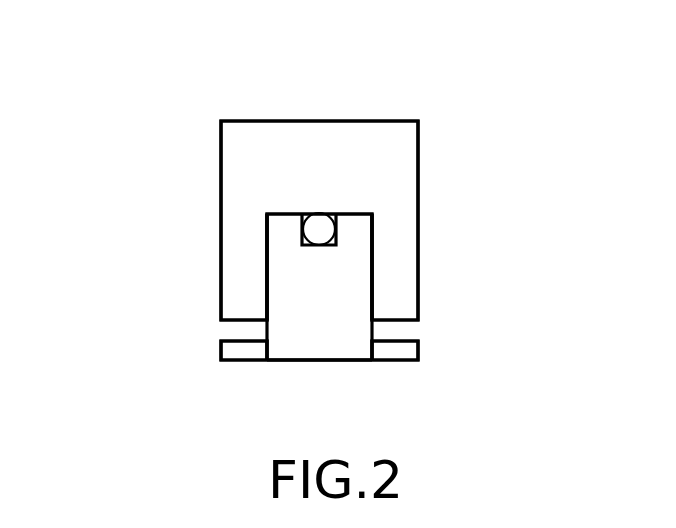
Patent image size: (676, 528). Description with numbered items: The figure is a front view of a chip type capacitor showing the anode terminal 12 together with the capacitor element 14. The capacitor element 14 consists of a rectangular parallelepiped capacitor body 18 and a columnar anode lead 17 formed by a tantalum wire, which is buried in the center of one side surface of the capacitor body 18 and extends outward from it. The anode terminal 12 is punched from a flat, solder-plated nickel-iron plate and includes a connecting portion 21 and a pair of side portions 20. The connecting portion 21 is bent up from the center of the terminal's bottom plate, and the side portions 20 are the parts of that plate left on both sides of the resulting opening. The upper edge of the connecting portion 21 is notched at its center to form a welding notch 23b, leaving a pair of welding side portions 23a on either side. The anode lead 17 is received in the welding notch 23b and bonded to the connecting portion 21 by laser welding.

The anode terminal 12 is at (205, 340).
The capacitor element 14 is at (348, 112).
The anode lead 17 is at (318, 214).
The capacitor body 18 is at (403, 168).
The side portions 20 is at (397, 352).
The connecting portion 21 is at (320, 290).
The welding side portions 23a is at (275, 217).
The welding notch 23b is at (306, 240).